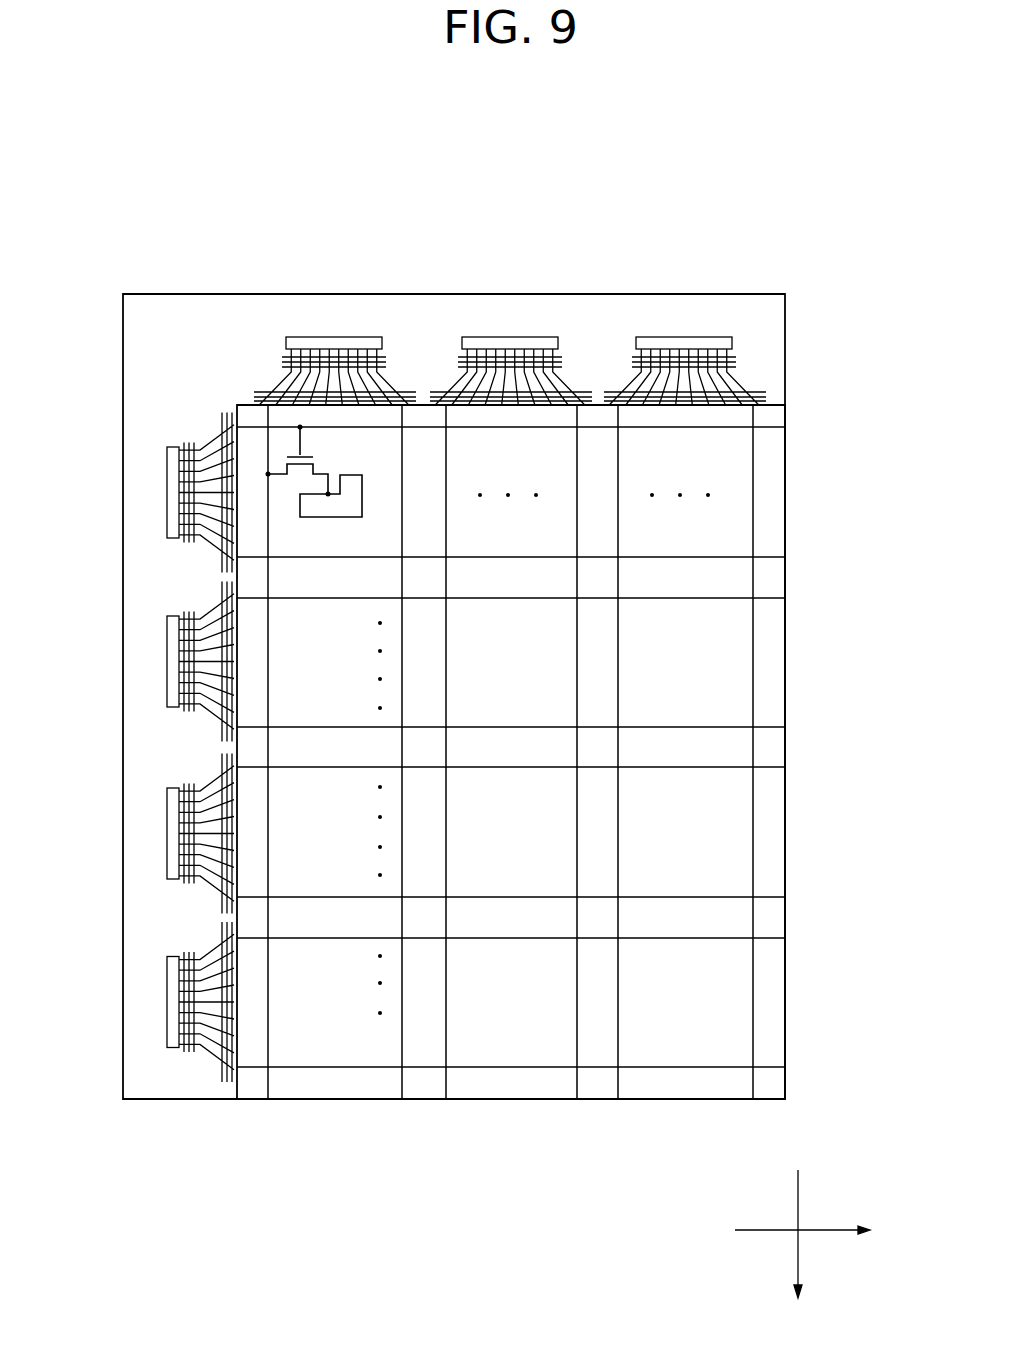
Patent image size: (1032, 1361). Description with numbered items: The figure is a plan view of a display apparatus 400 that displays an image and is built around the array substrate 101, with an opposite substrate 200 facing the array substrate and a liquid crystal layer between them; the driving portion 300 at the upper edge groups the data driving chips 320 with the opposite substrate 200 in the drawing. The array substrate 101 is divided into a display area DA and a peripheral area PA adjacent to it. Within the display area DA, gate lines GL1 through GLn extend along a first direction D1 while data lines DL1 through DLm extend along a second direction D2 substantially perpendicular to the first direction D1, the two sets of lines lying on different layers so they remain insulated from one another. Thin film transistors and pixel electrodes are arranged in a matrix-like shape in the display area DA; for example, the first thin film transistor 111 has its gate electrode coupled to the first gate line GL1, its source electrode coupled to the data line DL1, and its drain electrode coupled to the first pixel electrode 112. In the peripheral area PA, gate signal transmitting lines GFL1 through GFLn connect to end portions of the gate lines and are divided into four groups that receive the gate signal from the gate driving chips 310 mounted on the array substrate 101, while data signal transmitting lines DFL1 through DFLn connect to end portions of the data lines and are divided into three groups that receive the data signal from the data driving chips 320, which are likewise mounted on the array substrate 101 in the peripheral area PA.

The display apparatus 400 is at (461, 129).
The array substrate 101 is at (785, 337).
The opposite substrate 200 is at (727, 408).
The driving part 300 is at (879, 320).
The data driving chip 320 is at (342, 337).
The gate driving chip 310 is at (172, 497).
The first thin film transistor 111 is at (322, 451).
The first pixel electrode 112 is at (362, 503).
The data signal transmitting line DFL1 is at (292, 394).
The data signal transmitting line DFLn is at (738, 386).
The gate signal transmitting line GFL1 is at (216, 452).
The gate signal transmitting line GFLn is at (212, 1046).
The first gate line GL1 is at (500, 428).
The gate line GLn is at (513, 1067).
The data line DL1 is at (268, 540).
The data line DLm is at (752, 540).
The display area DA is at (698, 836).
The peripheral area PA is at (158, 1011).
The first direction D1 is at (818, 1231).
The second direction D2 is at (800, 1250).